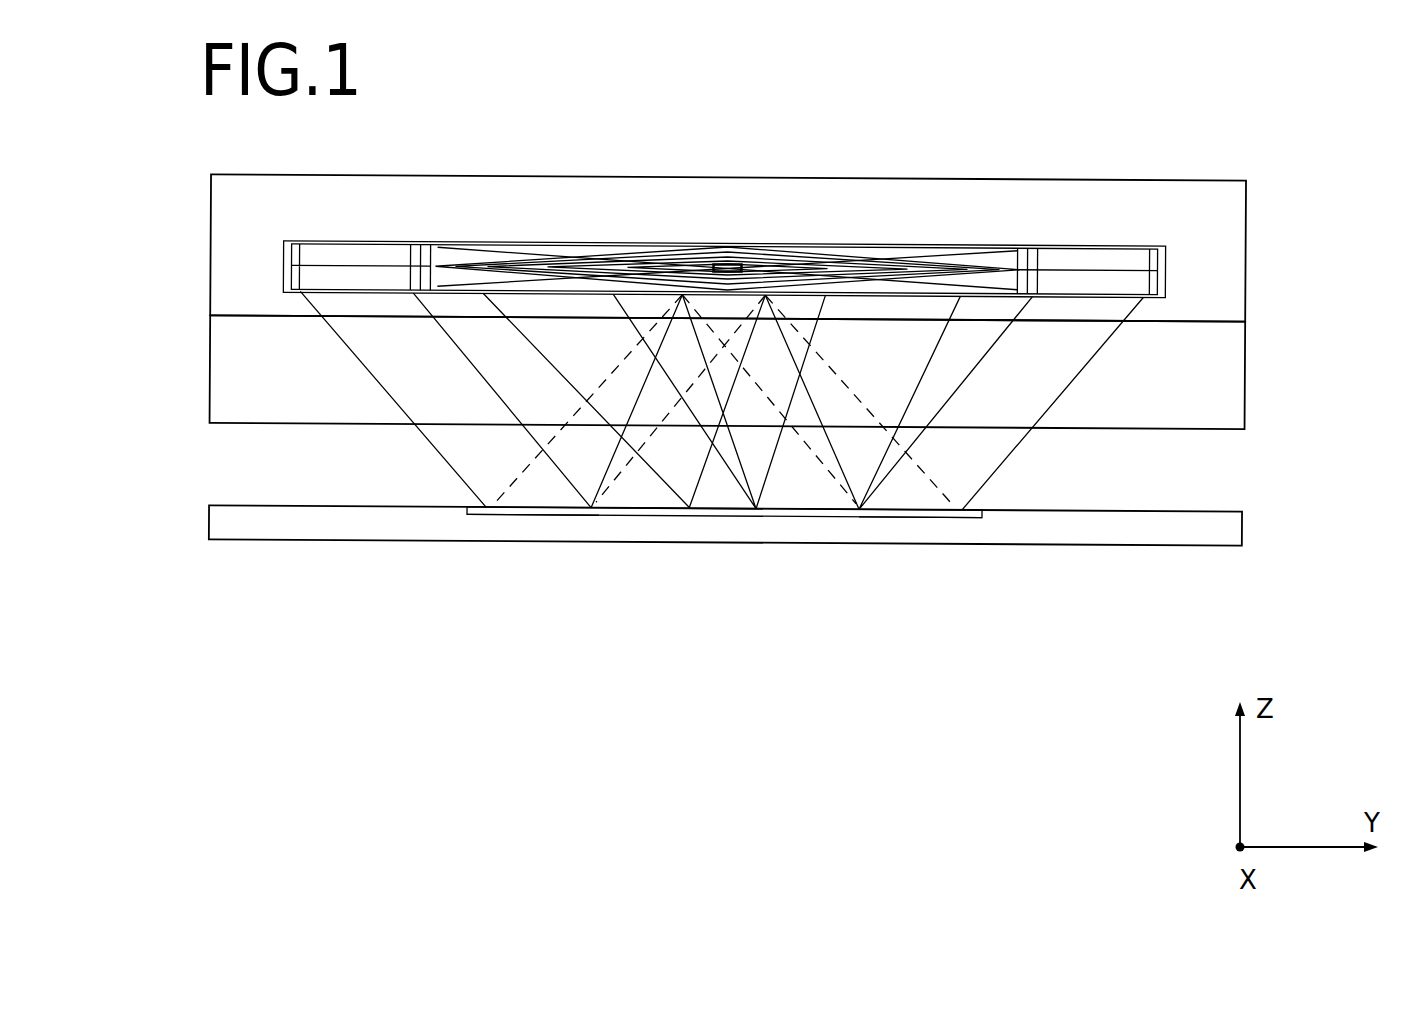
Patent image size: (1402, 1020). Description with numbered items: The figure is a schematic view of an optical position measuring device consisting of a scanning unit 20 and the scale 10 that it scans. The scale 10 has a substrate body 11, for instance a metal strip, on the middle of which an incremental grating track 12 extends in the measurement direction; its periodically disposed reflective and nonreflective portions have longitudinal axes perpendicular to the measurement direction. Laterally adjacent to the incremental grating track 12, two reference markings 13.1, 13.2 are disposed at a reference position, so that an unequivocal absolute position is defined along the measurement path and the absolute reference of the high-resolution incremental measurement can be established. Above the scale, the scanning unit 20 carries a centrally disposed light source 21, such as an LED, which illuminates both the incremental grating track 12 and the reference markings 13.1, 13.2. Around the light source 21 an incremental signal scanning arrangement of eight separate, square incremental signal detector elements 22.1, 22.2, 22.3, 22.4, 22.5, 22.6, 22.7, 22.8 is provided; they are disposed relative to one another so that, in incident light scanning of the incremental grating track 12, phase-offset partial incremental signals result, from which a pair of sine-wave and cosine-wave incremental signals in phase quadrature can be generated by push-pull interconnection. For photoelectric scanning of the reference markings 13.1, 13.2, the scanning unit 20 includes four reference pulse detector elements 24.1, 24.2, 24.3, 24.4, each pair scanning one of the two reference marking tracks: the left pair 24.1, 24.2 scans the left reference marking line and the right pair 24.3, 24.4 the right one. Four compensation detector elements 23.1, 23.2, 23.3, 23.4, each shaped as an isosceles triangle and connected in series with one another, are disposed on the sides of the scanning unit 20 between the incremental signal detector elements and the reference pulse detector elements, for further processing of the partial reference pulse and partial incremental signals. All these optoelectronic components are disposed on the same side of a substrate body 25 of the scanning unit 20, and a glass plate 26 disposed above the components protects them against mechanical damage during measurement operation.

The scale 10 is at (211, 568).
The substrate body 11 is at (385, 529).
The incremental grating track 12 is at (738, 517).
The reference marking 13.1 is at (527, 518).
The reference marking 13.2 is at (943, 513).
The scanning unit 20 is at (178, 353).
The light source 21 is at (743, 267).
The incremental signal detector element 22.1 is at (540, 263).
The incremental signal detector element 22.2 is at (633, 255).
The incremental signal detector element 22.3 is at (722, 253).
The incremental signal detector element 22.4 is at (817, 262).
The incremental signal detector element 22.5 is at (903, 267).
The incremental signal detector element 22.6 is at (817, 273).
The incremental signal detector element 22.7 is at (733, 283).
The incremental signal detector element 22.8 is at (630, 275).
The compensation detector element 23.1 is at (447, 284).
The compensation detector element 23.2 is at (441, 255).
The compensation detector element 23.3 is at (1003, 257).
The compensation detector element 23.4 is at (1010, 281).
The reference pulse detector element 24.1 is at (313, 276).
The reference pulse detector element 24.2 is at (318, 256).
The reference pulse detector element 24.3 is at (1083, 260).
The reference pulse detector element 24.4 is at (1117, 280).
The substrate body 25 is at (1217, 220).
The glass plate 26 is at (1207, 401).